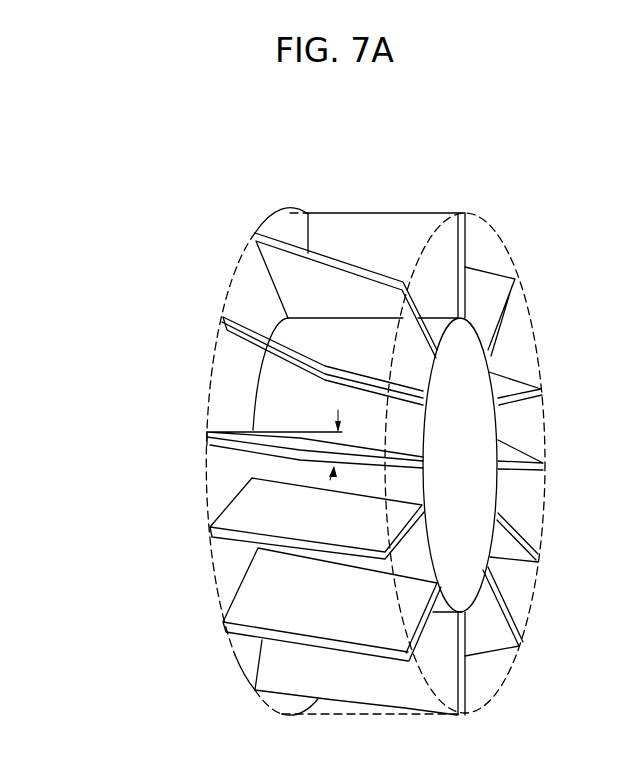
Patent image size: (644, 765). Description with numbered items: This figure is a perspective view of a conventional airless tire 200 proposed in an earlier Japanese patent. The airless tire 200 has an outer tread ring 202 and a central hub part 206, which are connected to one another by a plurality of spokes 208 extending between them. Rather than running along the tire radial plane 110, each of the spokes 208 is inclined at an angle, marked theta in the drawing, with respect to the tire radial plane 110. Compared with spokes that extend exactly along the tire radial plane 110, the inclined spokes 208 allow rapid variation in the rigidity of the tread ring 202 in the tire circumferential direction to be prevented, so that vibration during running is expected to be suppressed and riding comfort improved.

The airless tire 200 is at (153, 298).
The tread ring 202 is at (222, 285).
The hub part 206 is at (473, 317).
The tire radial plane 110 is at (297, 430).
The spokes 208 is at (243, 448).